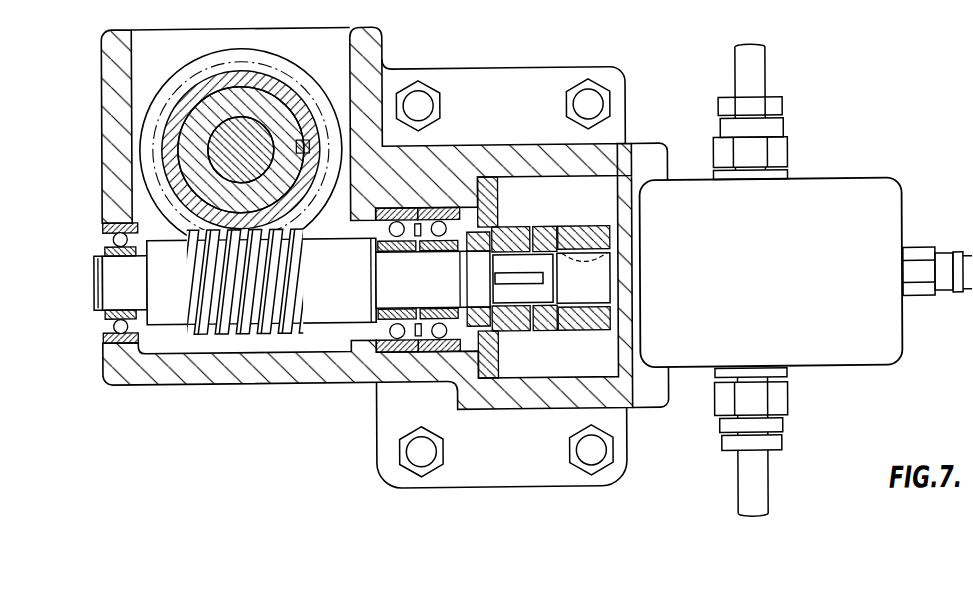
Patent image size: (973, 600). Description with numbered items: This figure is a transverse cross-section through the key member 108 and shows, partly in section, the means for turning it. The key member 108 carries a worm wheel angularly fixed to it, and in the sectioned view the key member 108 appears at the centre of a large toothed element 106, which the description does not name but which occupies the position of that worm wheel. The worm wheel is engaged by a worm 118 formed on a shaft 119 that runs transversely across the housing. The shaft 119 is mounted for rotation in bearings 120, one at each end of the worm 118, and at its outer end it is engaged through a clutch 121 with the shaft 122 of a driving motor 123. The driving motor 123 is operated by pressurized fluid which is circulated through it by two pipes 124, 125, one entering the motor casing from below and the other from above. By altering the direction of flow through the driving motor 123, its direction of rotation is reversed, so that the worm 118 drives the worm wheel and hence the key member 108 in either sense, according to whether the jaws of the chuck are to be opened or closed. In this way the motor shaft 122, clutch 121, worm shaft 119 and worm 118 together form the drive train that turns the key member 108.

The worm gear 106 is at (185, 85).
The key member 108 is at (221, 160).
The worm 118 is at (198, 334).
The shaft 119 is at (320, 314).
The bearings 120 is at (111, 323).
The clutch 121 is at (544, 235).
The shaft of a driving motor 122 is at (578, 297).
The driving motor 123 is at (786, 292).
The pipe 124 is at (743, 474).
The pipe 125 is at (742, 77).